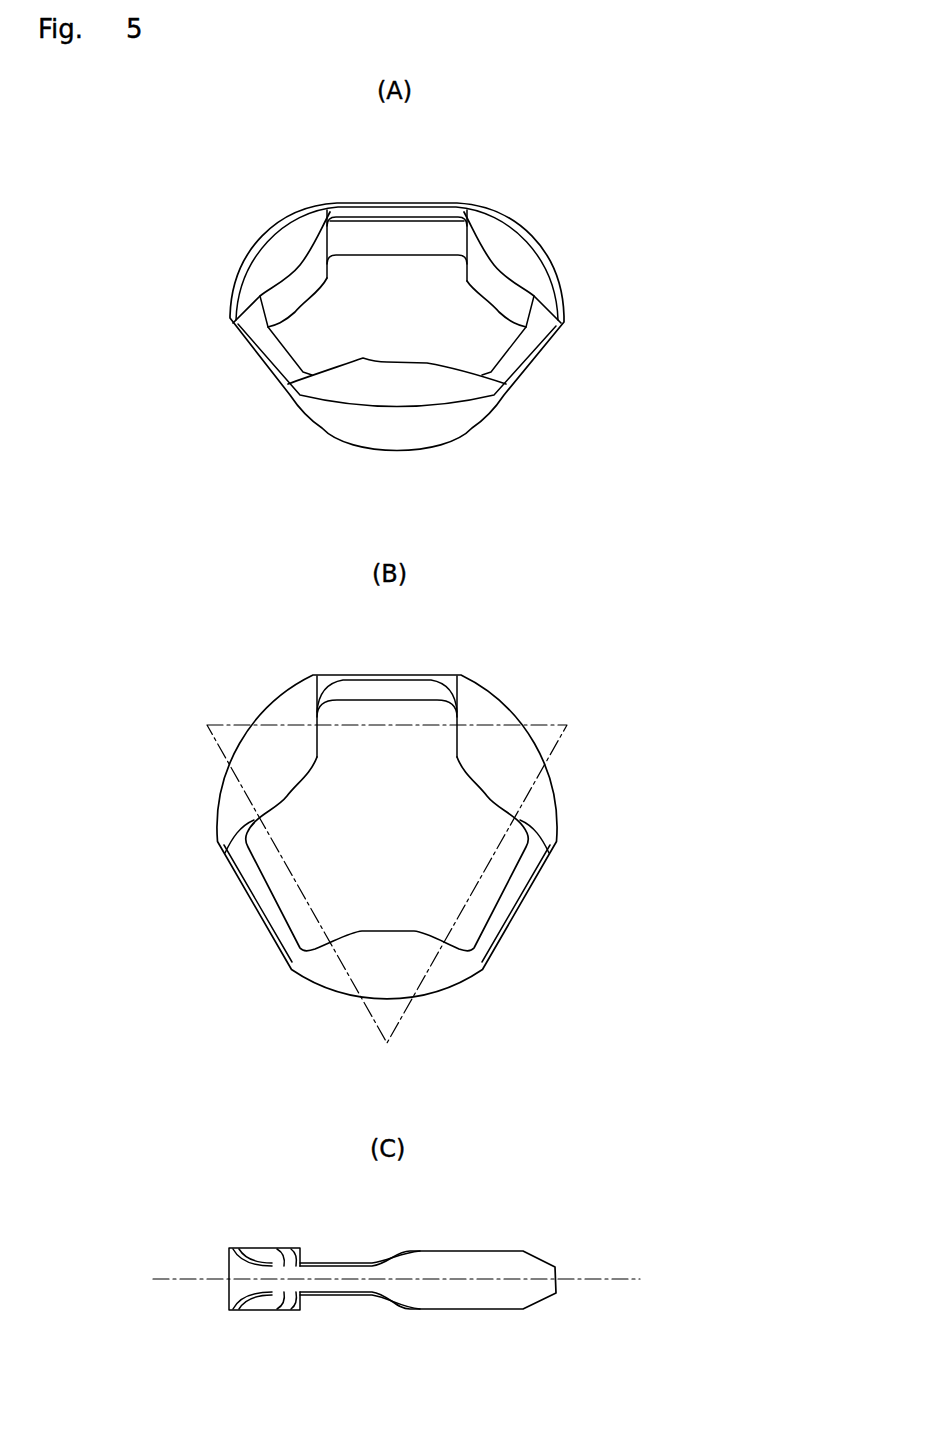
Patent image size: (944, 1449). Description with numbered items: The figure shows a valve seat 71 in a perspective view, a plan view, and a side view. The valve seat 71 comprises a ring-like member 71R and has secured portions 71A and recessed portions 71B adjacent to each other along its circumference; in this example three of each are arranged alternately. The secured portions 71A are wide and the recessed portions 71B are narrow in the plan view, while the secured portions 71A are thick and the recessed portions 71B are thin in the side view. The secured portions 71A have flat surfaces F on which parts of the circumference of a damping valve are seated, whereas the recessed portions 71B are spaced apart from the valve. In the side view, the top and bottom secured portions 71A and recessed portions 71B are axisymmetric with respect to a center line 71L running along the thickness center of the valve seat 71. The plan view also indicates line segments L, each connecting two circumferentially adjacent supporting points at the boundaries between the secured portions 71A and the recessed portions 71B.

The valve seat 71 is at (351, 756).
The secured portion 71A is at (447, 757).
The recessed portion 71B is at (350, 721).
The ring-like member 71R is at (337, 815).
The center line 71L is at (175, 1279).
The flat surface F is at (573, 750).
The line segment L is at (387, 845).